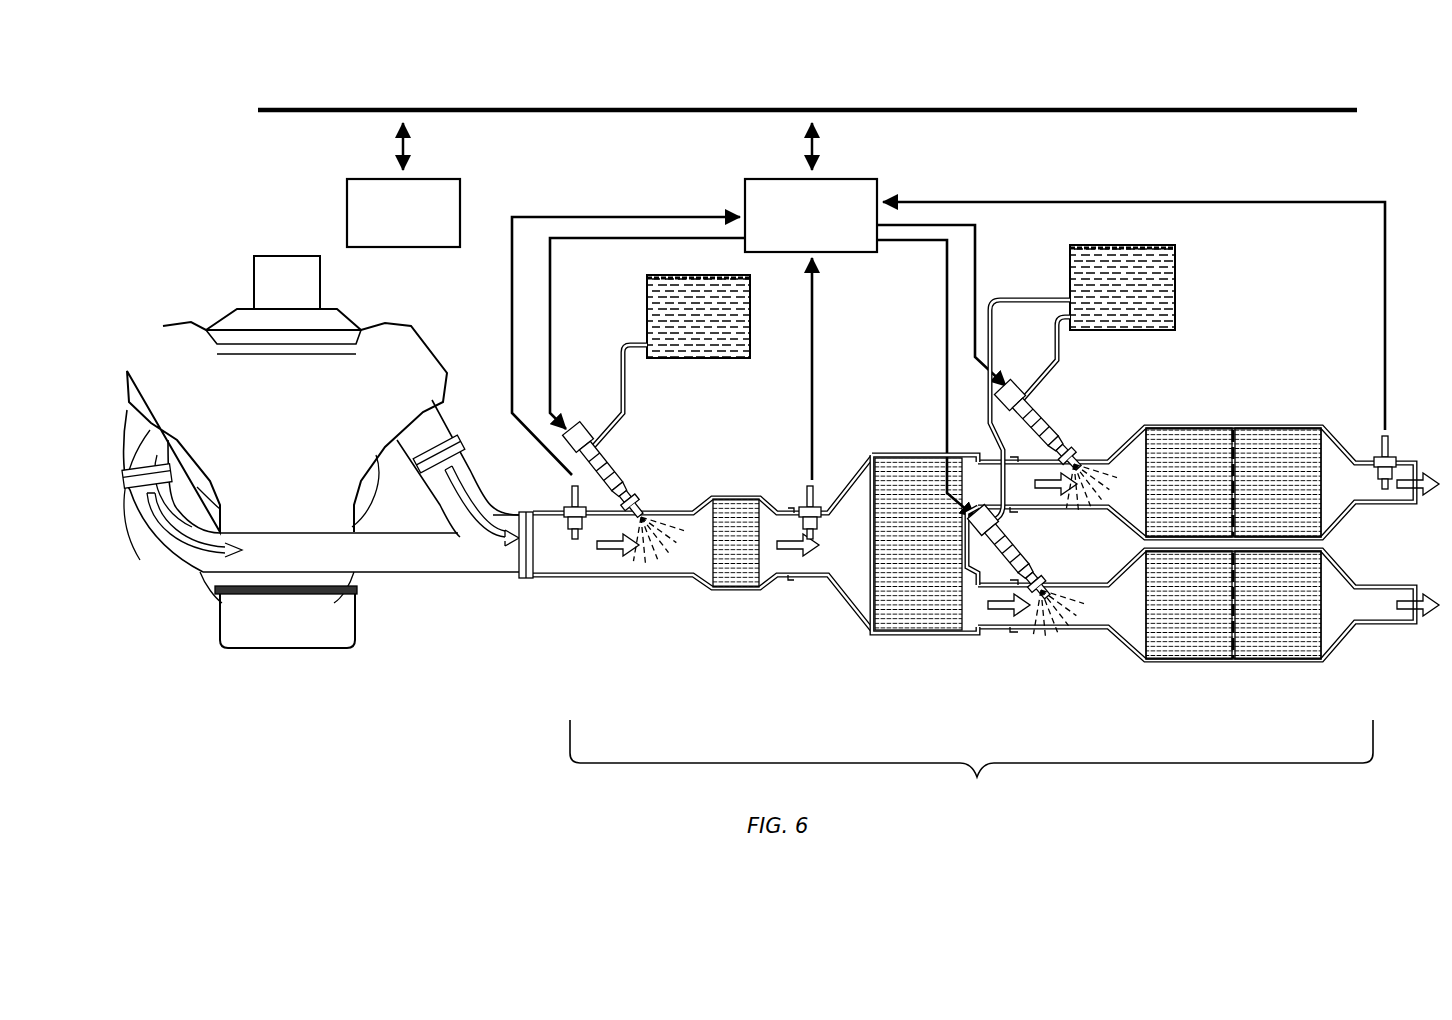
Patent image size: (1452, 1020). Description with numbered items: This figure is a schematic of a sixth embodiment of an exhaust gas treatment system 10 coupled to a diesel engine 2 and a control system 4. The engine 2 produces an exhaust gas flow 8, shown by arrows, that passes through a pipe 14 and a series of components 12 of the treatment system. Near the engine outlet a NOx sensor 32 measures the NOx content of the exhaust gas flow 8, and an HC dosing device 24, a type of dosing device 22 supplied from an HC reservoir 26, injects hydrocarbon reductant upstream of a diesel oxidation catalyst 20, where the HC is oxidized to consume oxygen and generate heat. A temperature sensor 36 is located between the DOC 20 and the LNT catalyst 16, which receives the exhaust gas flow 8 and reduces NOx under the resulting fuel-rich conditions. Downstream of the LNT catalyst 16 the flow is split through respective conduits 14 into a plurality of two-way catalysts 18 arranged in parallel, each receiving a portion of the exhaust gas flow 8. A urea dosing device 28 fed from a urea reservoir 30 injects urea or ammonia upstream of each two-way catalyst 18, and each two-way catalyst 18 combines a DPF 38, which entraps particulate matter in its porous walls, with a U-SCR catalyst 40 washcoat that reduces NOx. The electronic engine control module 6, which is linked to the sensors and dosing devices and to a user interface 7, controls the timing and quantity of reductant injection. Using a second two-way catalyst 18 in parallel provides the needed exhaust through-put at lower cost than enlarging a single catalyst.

The diesel engine 2 is at (173, 316).
The control system 4 is at (900, 104).
The electronic engine control module 6 is at (739, 188).
The user interface 7 is at (338, 196).
The exhaust gas flow 8 is at (613, 557).
The exhaust gas treatment system 10 is at (977, 777).
The component 12 is at (742, 494).
The pipe 14 is at (575, 578).
The LNT catalyst 16 is at (920, 636).
The two-way catalyst 18 is at (1223, 428).
The diesel oxidation catalyst 20 is at (736, 590).
The dosing device 22 is at (622, 468).
The HC dosing device 24 is at (657, 505).
The HC reservoir 26 is at (655, 318).
The urea dosing device 28 is at (1083, 447).
The urea reservoir 30 is at (1167, 278).
The NOx sensor 32 is at (568, 490).
The temperature sensor 36 is at (815, 480).
The DPF 38 is at (1182, 452).
The U-SCR catalyst 40 is at (1290, 452).